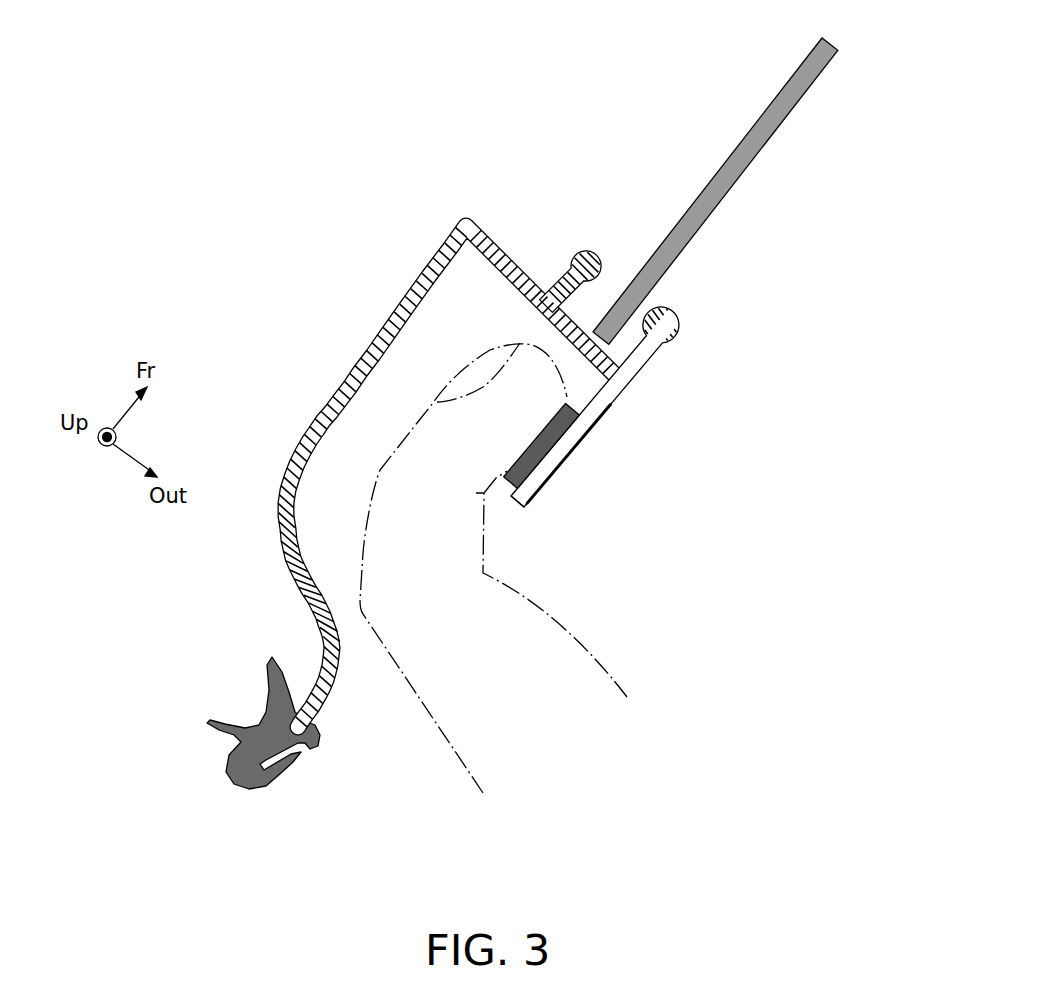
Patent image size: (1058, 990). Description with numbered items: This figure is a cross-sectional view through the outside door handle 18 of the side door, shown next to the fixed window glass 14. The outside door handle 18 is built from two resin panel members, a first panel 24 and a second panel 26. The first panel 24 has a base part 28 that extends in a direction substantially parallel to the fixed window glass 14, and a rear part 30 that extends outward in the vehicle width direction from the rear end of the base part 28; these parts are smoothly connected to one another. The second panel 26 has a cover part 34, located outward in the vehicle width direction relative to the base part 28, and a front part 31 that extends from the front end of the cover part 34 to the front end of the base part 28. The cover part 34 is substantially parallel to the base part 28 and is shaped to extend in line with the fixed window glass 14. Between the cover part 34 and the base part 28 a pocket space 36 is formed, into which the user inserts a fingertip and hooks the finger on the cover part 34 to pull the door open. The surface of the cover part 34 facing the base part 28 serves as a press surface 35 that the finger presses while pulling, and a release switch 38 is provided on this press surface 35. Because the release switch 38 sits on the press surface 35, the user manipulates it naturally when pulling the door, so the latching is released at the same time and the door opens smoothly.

The fixed window glass 14 is at (743, 170).
The outside door handle 18 is at (417, 108).
The first panel 24 is at (483, 479).
The second panel 26 is at (665, 355).
The base part 28 is at (380, 330).
The rear part 30 is at (284, 561).
The front part 31 is at (513, 258).
The cover part 34 is at (592, 438).
The press surface 35 is at (510, 495).
The pocket space 36 is at (484, 336).
The release switch 38 is at (540, 450).